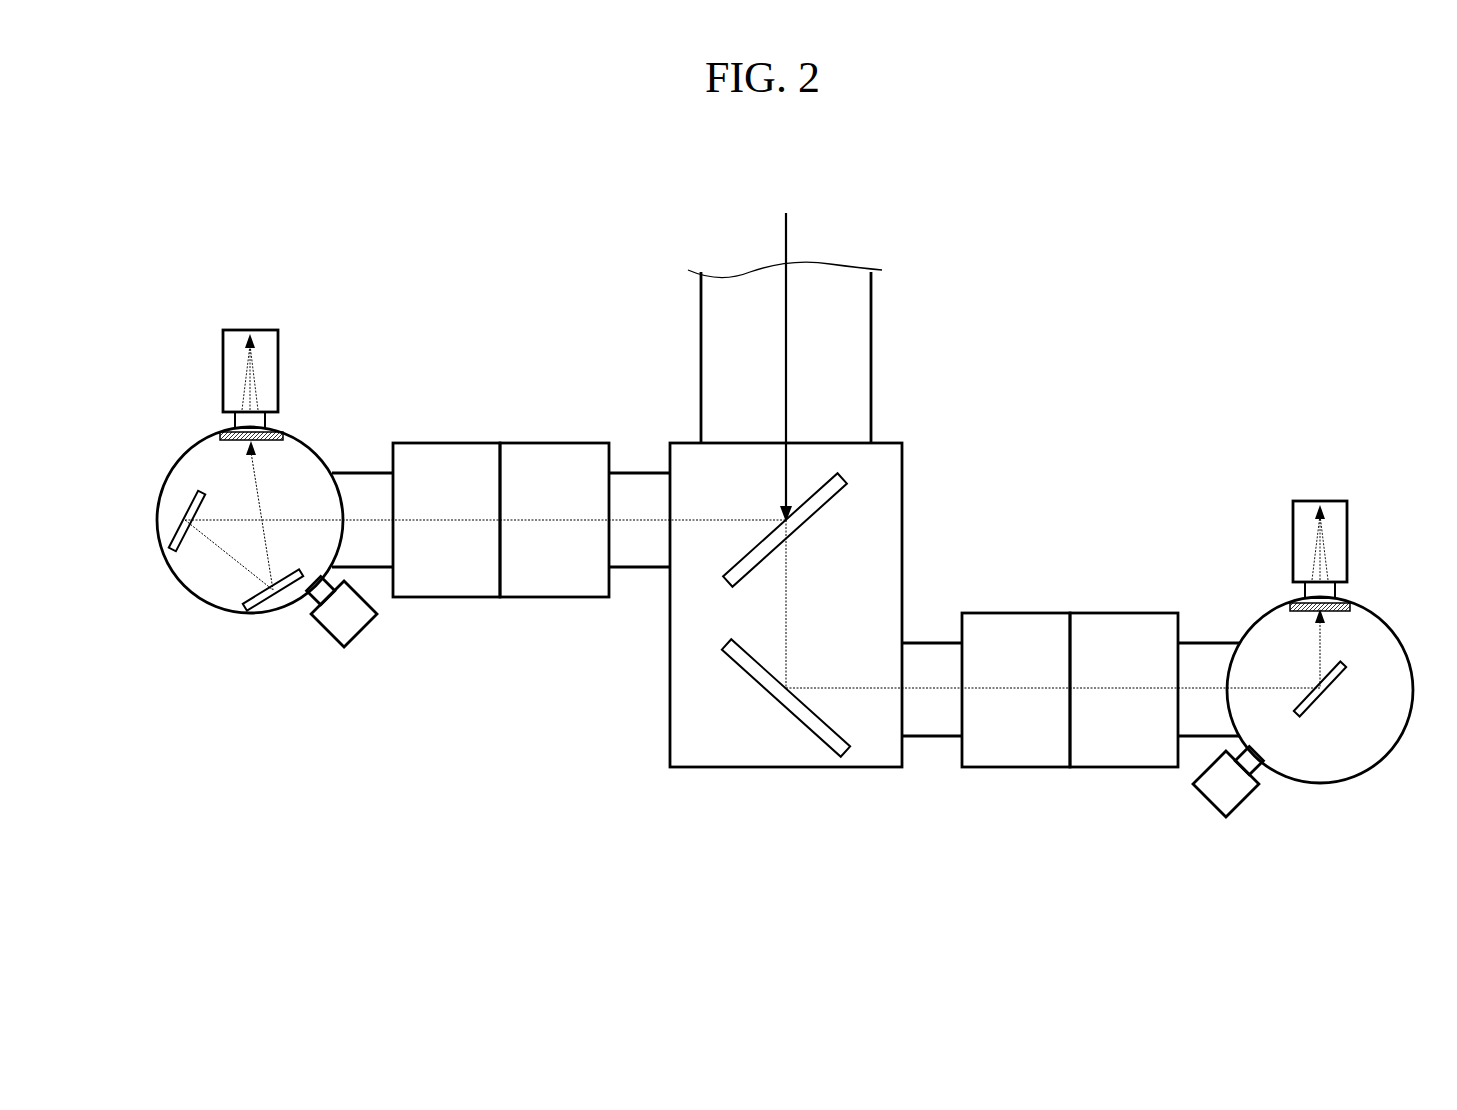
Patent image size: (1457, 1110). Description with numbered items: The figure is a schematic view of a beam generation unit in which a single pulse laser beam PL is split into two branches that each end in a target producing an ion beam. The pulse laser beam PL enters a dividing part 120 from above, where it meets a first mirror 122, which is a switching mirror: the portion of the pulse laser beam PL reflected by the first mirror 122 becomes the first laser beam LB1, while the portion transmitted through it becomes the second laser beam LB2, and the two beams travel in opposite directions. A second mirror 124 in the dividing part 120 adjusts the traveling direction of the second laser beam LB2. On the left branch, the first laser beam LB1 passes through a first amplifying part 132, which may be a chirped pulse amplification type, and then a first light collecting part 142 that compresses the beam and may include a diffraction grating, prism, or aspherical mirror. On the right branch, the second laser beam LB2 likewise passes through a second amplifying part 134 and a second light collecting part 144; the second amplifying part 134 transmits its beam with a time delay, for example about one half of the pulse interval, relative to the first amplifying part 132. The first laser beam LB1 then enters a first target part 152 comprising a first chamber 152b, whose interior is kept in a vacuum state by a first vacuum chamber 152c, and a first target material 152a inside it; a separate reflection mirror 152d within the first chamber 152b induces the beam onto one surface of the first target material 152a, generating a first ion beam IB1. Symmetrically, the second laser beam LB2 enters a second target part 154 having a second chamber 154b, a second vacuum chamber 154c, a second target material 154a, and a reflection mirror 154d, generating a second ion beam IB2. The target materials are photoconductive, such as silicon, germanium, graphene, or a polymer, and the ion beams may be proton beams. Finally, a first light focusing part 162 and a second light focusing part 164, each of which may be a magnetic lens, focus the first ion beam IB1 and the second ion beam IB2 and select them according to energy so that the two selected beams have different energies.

The dividing part 120 is at (903, 471).
The first mirror 122 is at (812, 519).
The second mirror 124 is at (775, 707).
The first amplifying part 132 is at (550, 600).
The second amplifying part 134 is at (1015, 768).
The first light collecting part 142 is at (445, 600).
The second light collecting part 144 is at (1124, 768).
The first target part 152 is at (148, 578).
The first target material 152a is at (268, 444).
The first chamber 152b is at (172, 448).
The first vacuum chamber 152c is at (328, 640).
The reflection mirror 152d is at (262, 596).
The second target part 154 is at (1400, 766).
The second target material 154a is at (1304, 612).
The second chamber 154b is at (1386, 620).
The second vacuum chamber 154c is at (1243, 806).
The reflection mirror 154d is at (1318, 702).
The first light focusing part 162 is at (280, 370).
The second light focusing part 164 is at (1292, 540).
The pulse laser beam PL is at (790, 238).
The first laser beam LB1 is at (727, 520).
The second laser beam LB2 is at (790, 612).
The first ion beam IB1 is at (247, 366).
The second ion beam IB2 is at (1326, 532).